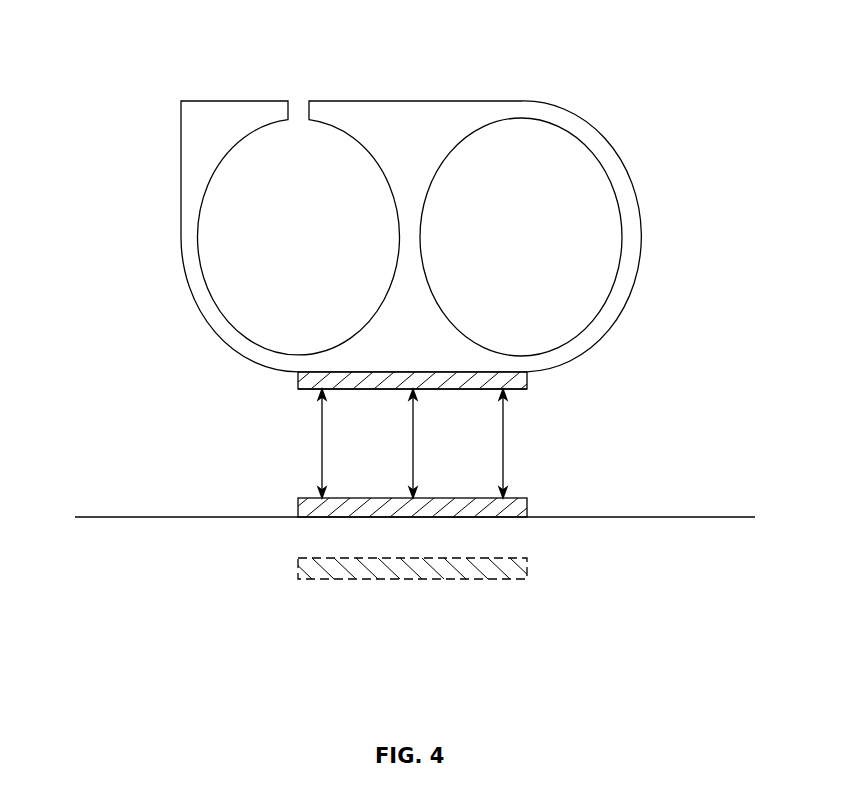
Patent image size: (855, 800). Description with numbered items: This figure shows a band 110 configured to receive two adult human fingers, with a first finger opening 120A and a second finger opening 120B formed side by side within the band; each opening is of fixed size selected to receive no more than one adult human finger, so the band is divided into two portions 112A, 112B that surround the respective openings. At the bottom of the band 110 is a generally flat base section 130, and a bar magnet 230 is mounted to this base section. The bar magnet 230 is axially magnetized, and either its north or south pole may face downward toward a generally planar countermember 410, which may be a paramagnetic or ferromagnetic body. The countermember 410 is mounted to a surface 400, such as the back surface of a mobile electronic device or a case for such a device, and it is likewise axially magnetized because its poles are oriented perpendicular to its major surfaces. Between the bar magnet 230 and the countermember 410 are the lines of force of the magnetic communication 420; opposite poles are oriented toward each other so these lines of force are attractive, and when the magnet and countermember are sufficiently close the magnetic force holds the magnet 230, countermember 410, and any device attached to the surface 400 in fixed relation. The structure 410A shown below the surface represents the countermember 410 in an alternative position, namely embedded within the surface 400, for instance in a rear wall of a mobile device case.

The band 110 is at (410, 115).
The first speaker portion 112A is at (167, 222).
The second speaker portion 112B is at (655, 223).
The first finger opening 120A is at (330, 253).
The second finger opening 120B is at (553, 253).
The generally flat base section 130 is at (343, 370).
The bar magnet 230 is at (527, 388).
The surface 400 is at (677, 553).
The countermember 410 is at (520, 498).
The countermember in alternative position 410A is at (298, 570).
The magnetic communication 420 is at (322, 440).